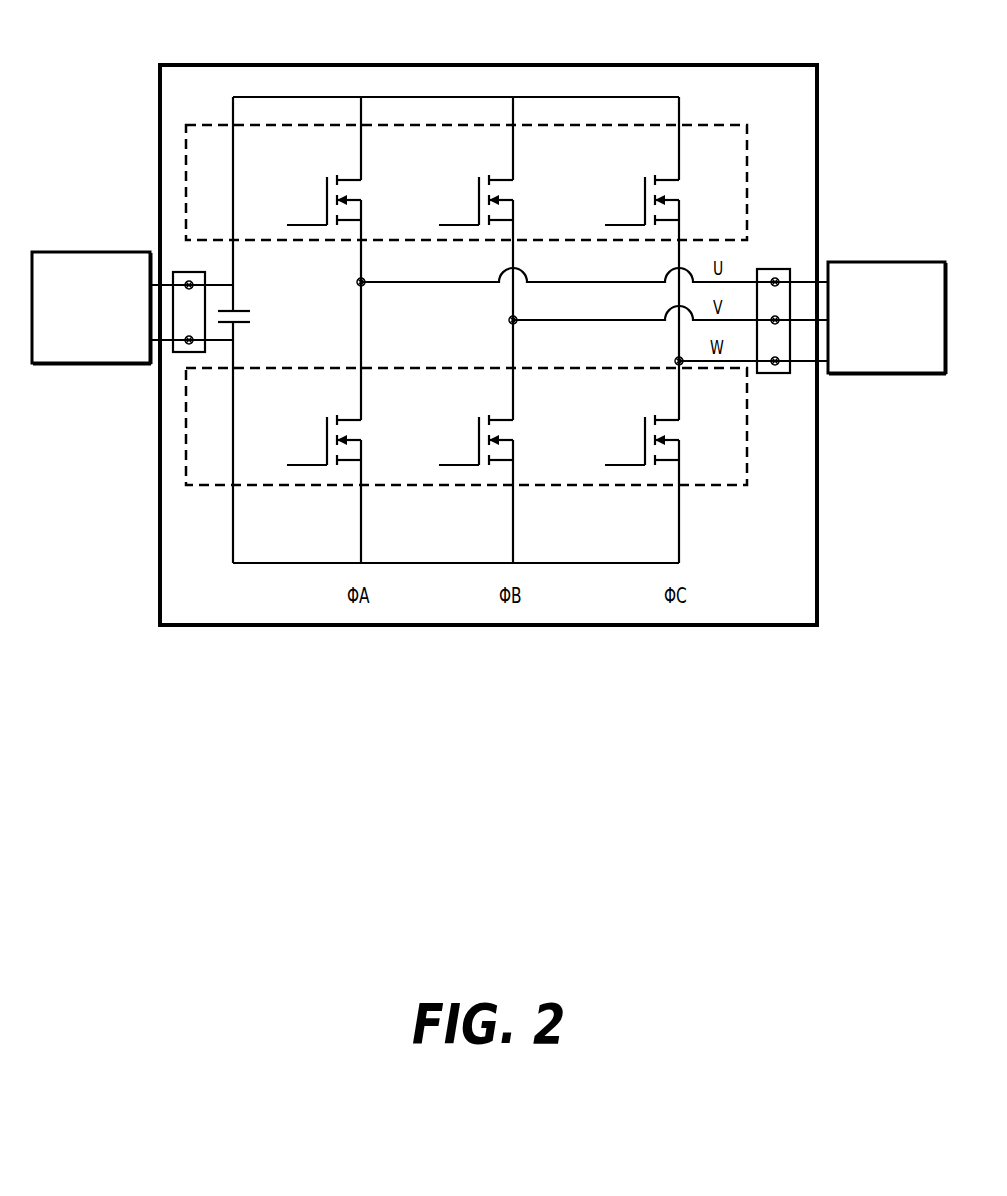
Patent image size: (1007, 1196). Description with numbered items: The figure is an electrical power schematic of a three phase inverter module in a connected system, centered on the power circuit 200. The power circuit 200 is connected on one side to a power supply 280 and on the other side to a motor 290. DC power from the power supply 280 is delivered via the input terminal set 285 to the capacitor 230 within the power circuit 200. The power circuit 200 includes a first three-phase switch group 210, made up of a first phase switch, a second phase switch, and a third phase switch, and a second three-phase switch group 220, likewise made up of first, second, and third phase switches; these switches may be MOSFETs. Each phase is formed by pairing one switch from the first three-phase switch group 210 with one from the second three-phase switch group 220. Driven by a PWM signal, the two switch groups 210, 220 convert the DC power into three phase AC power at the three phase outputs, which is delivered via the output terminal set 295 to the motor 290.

The power circuit 200 is at (497, 65).
The first three-phase switch group 210 is at (408, 123).
The second three-phase switch group 220 is at (424, 368).
The capacitor 230 is at (253, 316).
The power supply 280 is at (73, 252).
The input terminal set 285 is at (207, 271).
The motor 290 is at (868, 262).
The output terminal set 295 is at (768, 269).